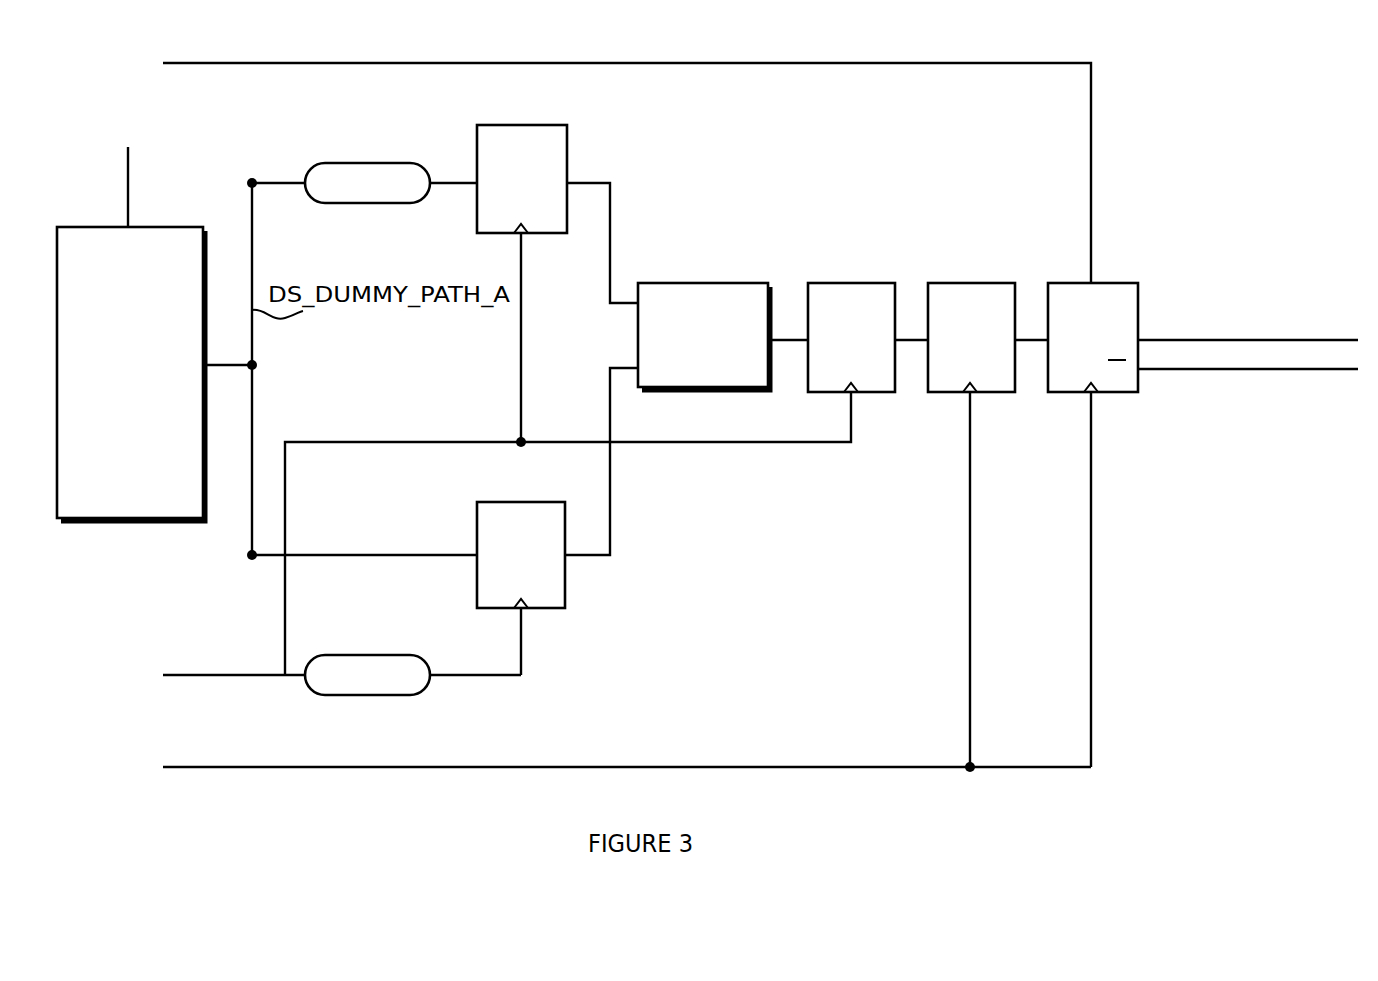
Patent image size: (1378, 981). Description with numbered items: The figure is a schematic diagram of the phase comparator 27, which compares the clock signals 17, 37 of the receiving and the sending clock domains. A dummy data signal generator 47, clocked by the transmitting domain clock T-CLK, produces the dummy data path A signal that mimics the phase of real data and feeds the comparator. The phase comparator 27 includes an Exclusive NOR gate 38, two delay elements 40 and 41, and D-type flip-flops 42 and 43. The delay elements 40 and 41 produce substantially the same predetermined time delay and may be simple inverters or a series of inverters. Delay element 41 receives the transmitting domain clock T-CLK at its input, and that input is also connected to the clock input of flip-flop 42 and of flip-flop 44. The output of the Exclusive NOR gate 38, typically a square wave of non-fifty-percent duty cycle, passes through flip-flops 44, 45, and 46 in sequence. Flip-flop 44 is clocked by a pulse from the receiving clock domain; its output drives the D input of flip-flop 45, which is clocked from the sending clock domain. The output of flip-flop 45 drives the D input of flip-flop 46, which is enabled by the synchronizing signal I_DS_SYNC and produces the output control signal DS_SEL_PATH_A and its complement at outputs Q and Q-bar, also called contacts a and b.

The phase comparator 27 is at (729, 37).
The clock signal 17 is at (235, 675).
The clock signal 37 is at (340, 767).
The Exclusive NOR gate 38 is at (685, 283).
The delay element 40 is at (327, 163).
The delay element 41 is at (398, 695).
The D-type flip-flop 42 is at (567, 151).
The D-type flip-flop 43 is at (565, 600).
The flip-flop 44 is at (860, 283).
The D-type flip-flop 45 is at (995, 283).
The flip-flop 46 is at (1115, 283).
The dummy data signal generator 47 is at (100, 523).